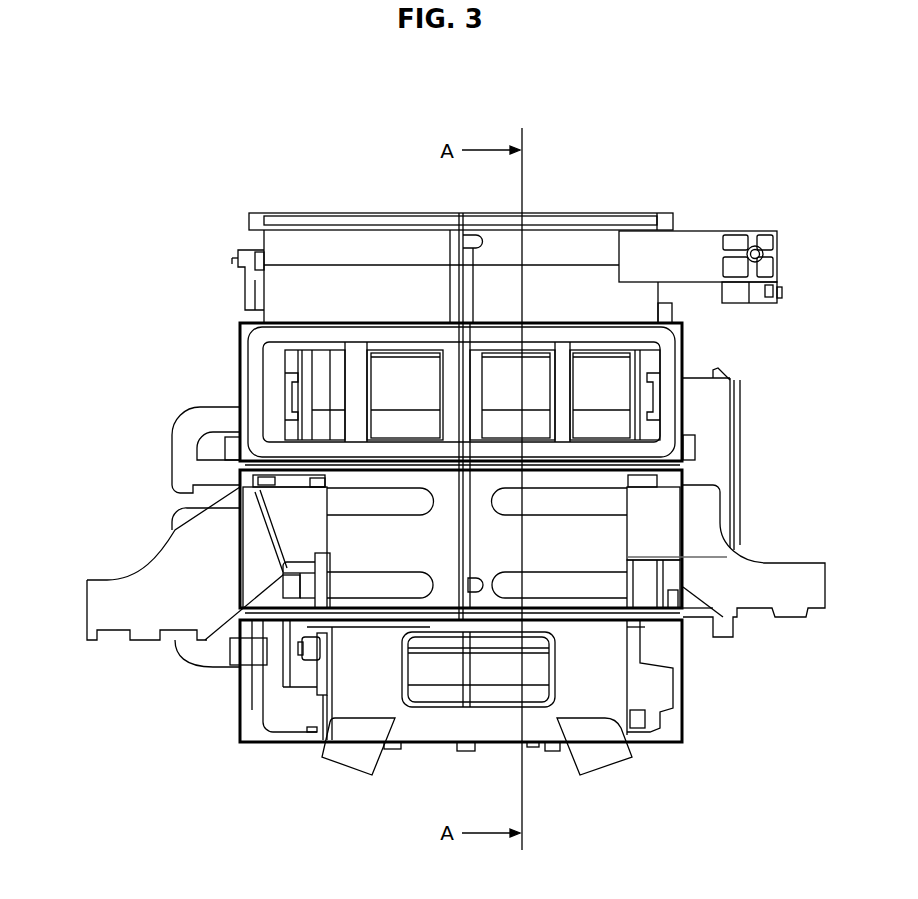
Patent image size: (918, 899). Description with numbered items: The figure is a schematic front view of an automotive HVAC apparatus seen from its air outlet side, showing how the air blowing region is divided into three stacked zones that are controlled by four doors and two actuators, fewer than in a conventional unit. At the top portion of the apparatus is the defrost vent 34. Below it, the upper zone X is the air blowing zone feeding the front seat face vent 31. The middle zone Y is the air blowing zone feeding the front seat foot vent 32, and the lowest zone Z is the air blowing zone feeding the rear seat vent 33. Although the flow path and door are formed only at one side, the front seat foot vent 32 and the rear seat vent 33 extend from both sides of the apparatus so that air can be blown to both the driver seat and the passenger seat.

The front seat face vent 31 is at (325, 390).
The front seat foot vent 32 is at (185, 573).
The rear seat vent 33 is at (433, 668).
The defrost vent 34 is at (315, 212).
The zone X is at (683, 353).
The zone Y is at (683, 523).
The zone Z is at (682, 680).